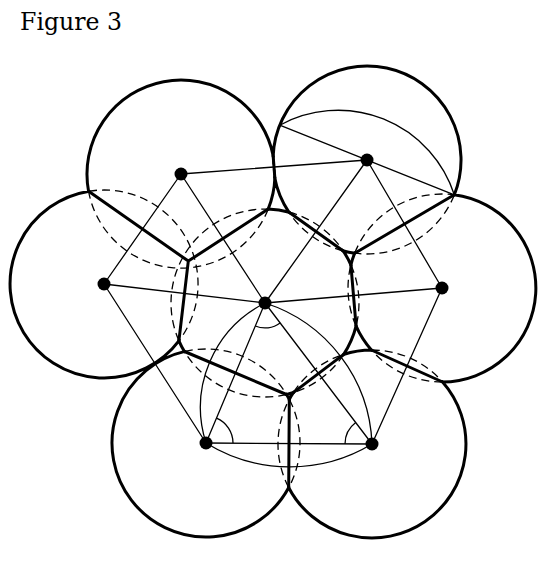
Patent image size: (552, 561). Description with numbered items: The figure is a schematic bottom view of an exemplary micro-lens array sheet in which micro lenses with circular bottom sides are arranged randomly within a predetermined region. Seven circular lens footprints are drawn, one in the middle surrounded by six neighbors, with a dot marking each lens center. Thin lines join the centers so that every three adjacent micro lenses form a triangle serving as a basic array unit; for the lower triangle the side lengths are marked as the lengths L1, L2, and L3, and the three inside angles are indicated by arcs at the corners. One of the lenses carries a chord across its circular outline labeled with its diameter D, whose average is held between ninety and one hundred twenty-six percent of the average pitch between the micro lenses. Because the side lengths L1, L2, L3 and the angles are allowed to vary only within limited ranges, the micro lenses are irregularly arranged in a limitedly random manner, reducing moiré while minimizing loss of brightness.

The diameter D is at (367, 152).
The length of a side of a basic array unit L1 is at (289, 467).
The length of a side of a basic array unit L2 is at (320, 373).
The length of a side of a basic array unit L3 is at (233, 373).